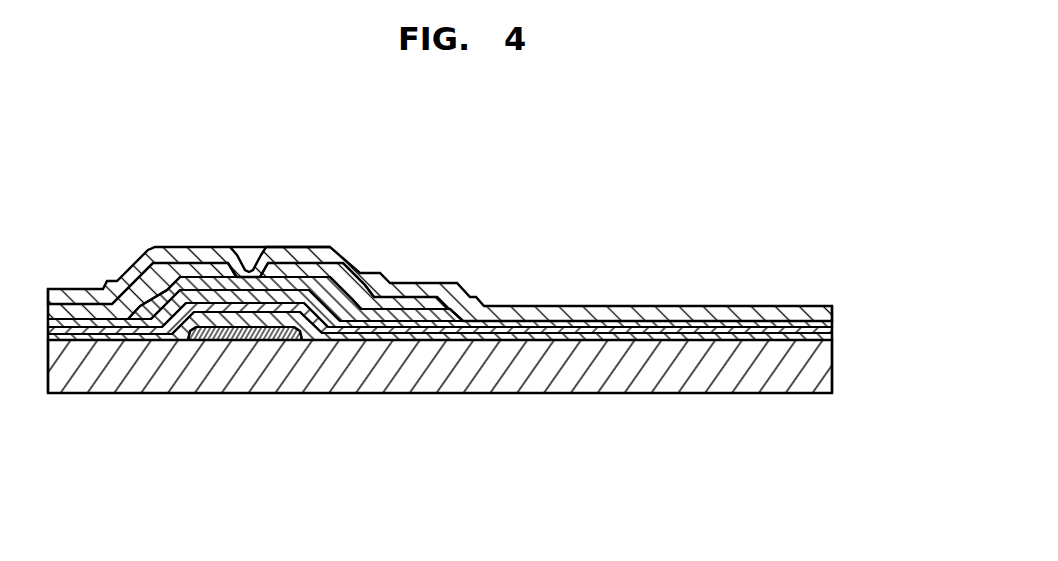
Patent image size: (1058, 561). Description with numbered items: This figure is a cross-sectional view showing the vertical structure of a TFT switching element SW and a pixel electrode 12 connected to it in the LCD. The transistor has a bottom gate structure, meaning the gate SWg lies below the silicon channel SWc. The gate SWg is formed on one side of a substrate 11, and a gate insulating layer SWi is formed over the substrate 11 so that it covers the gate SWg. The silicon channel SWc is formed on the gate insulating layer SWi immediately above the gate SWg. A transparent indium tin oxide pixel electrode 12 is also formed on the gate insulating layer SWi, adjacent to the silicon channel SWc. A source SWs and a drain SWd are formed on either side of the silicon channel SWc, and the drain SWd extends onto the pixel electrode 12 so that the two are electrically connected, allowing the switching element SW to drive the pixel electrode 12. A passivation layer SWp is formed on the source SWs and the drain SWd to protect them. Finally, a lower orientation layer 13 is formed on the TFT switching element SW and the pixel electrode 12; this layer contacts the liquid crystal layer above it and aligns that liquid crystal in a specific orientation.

The substrate 11 is at (816, 373).
The pixel electrode 12 is at (832, 327).
The lower orientation layer 13 is at (832, 312).
The TFT switching element SW is at (255, 330).
The gate SWg is at (244, 340).
The gate insulating layer SWi is at (413, 337).
The silicon channel SWc is at (337, 325).
The source SWs is at (187, 290).
The drain SWd is at (354, 361).
The passivation layer SWp is at (316, 243).